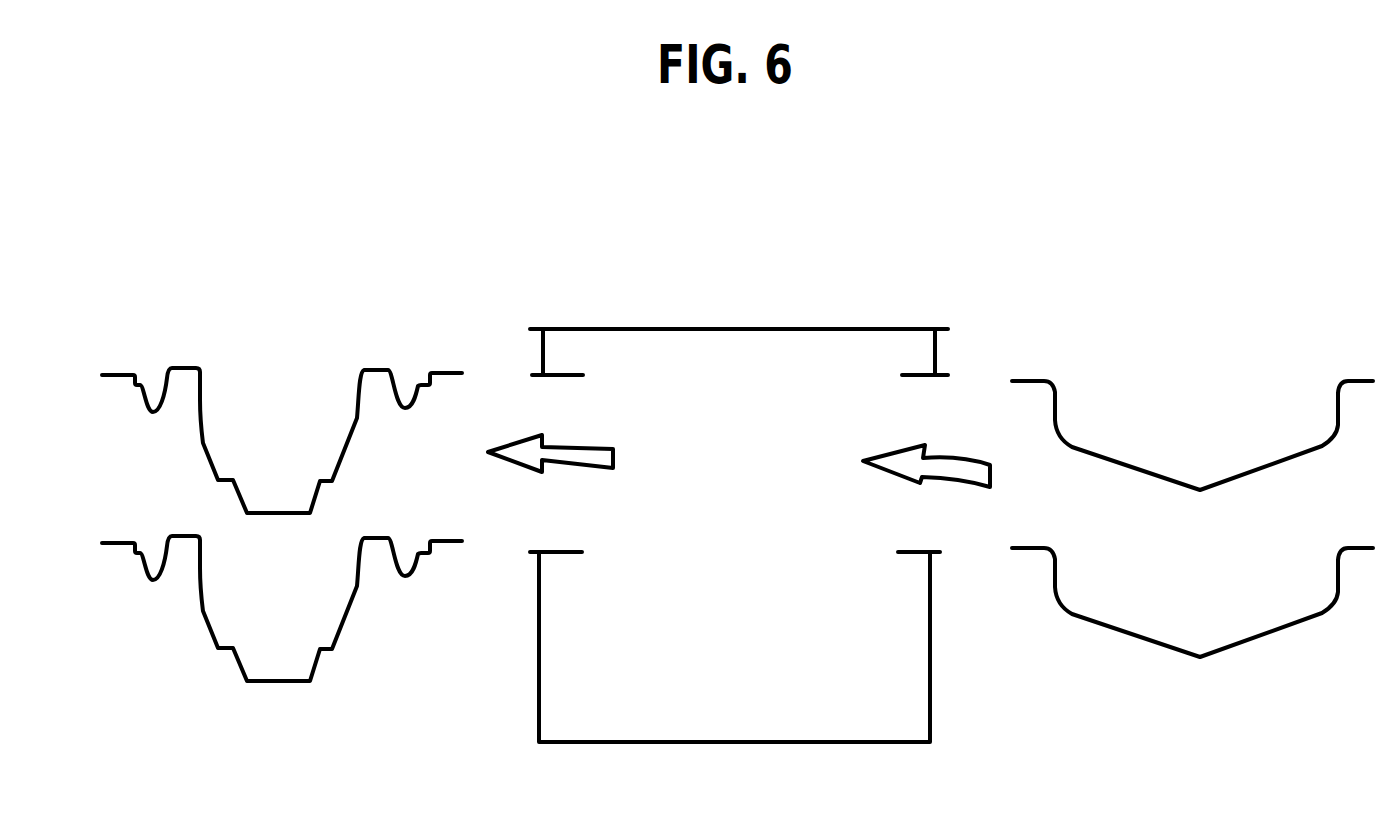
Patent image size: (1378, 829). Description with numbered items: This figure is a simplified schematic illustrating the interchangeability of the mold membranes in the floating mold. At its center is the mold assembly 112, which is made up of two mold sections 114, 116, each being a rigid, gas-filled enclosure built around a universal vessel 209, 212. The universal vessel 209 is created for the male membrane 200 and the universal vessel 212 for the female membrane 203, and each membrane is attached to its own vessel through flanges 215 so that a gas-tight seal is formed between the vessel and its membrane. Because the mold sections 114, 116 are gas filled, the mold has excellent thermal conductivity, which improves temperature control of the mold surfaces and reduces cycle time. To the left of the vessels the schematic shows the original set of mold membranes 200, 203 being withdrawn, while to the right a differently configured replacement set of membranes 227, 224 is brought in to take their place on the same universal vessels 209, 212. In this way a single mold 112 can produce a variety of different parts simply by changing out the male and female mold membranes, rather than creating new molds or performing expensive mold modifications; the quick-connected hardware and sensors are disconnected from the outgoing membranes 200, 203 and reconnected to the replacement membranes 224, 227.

The mold assembly 112 is at (460, 273).
The mold section 114 is at (962, 294).
The mold section 116 is at (957, 720).
The male mold membrane 200 is at (203, 443).
The female mold membrane 203 is at (207, 624).
The universal vessel 209 is at (832, 327).
The universal vessel 212 is at (902, 743).
The flanges 215 is at (912, 377).
The replacement mold membrane 224 is at (1157, 643).
The replacement mold membrane 227 is at (1130, 467).